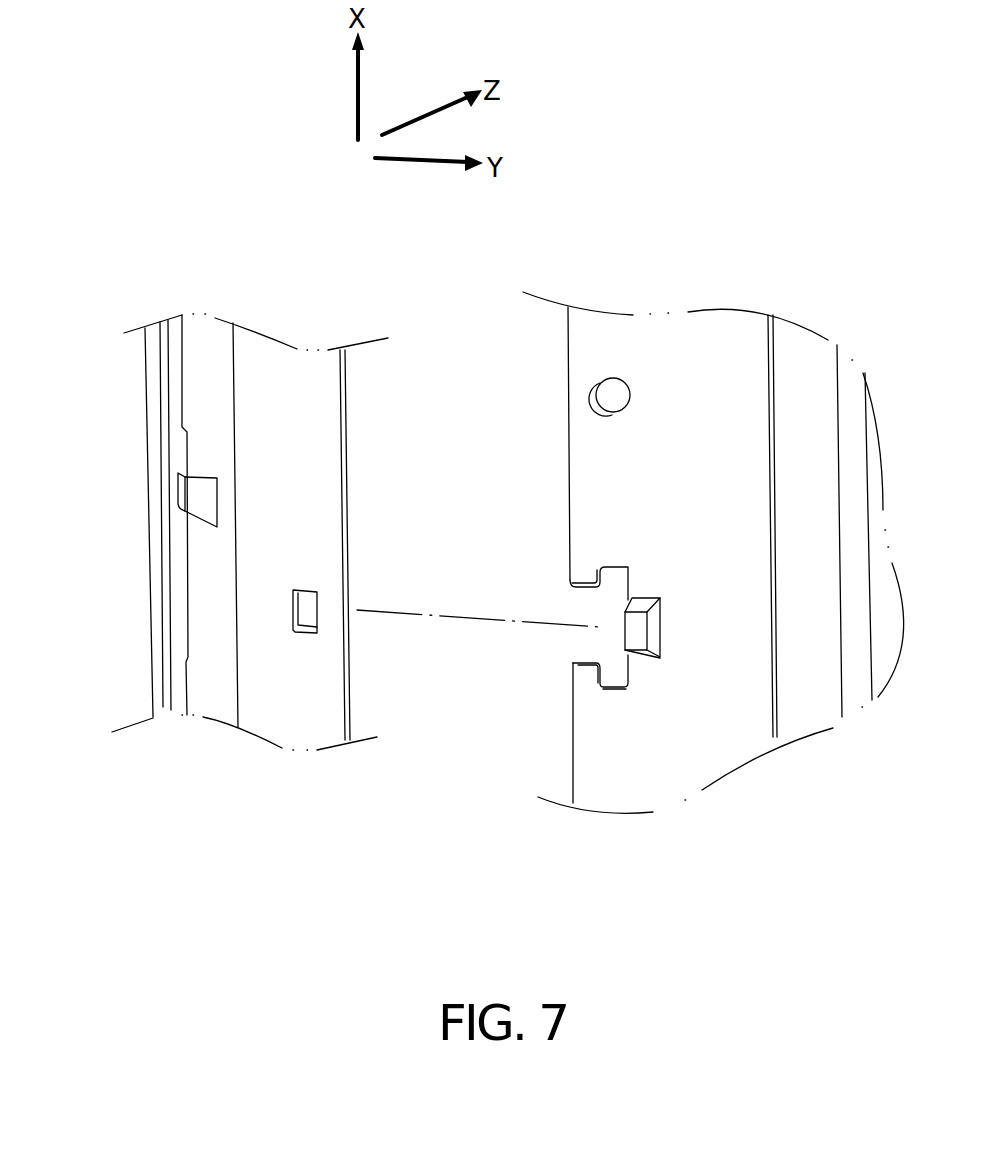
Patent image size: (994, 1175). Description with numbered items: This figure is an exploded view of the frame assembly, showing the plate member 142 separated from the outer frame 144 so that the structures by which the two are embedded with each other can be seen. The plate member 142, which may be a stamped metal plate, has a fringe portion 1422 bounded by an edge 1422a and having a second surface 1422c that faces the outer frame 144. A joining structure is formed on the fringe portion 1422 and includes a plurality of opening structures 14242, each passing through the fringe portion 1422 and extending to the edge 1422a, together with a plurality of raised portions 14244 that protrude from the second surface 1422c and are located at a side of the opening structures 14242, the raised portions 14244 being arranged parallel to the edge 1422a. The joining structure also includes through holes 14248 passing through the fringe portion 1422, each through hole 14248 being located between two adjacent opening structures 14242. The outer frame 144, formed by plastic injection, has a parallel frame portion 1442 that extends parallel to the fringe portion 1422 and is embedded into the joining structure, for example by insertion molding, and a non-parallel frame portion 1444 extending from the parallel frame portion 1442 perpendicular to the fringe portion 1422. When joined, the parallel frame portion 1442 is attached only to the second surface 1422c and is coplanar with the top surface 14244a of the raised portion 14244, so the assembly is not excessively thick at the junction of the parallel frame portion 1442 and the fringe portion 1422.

The plate member 142 is at (668, 551).
The fringe portion 1422 is at (697, 348).
The edge 1422a is at (572, 733).
The second surface 1422c is at (723, 505).
The opening structure 14242 is at (592, 605).
The raised portion 14244 is at (657, 632).
The top surface of the raised portion 14244a is at (635, 643).
The through hole 14248 is at (608, 390).
The outer frame 144 is at (298, 214).
The parallel frame portion 1442 is at (282, 388).
The non-parallel frame portion 1444 is at (173, 388).